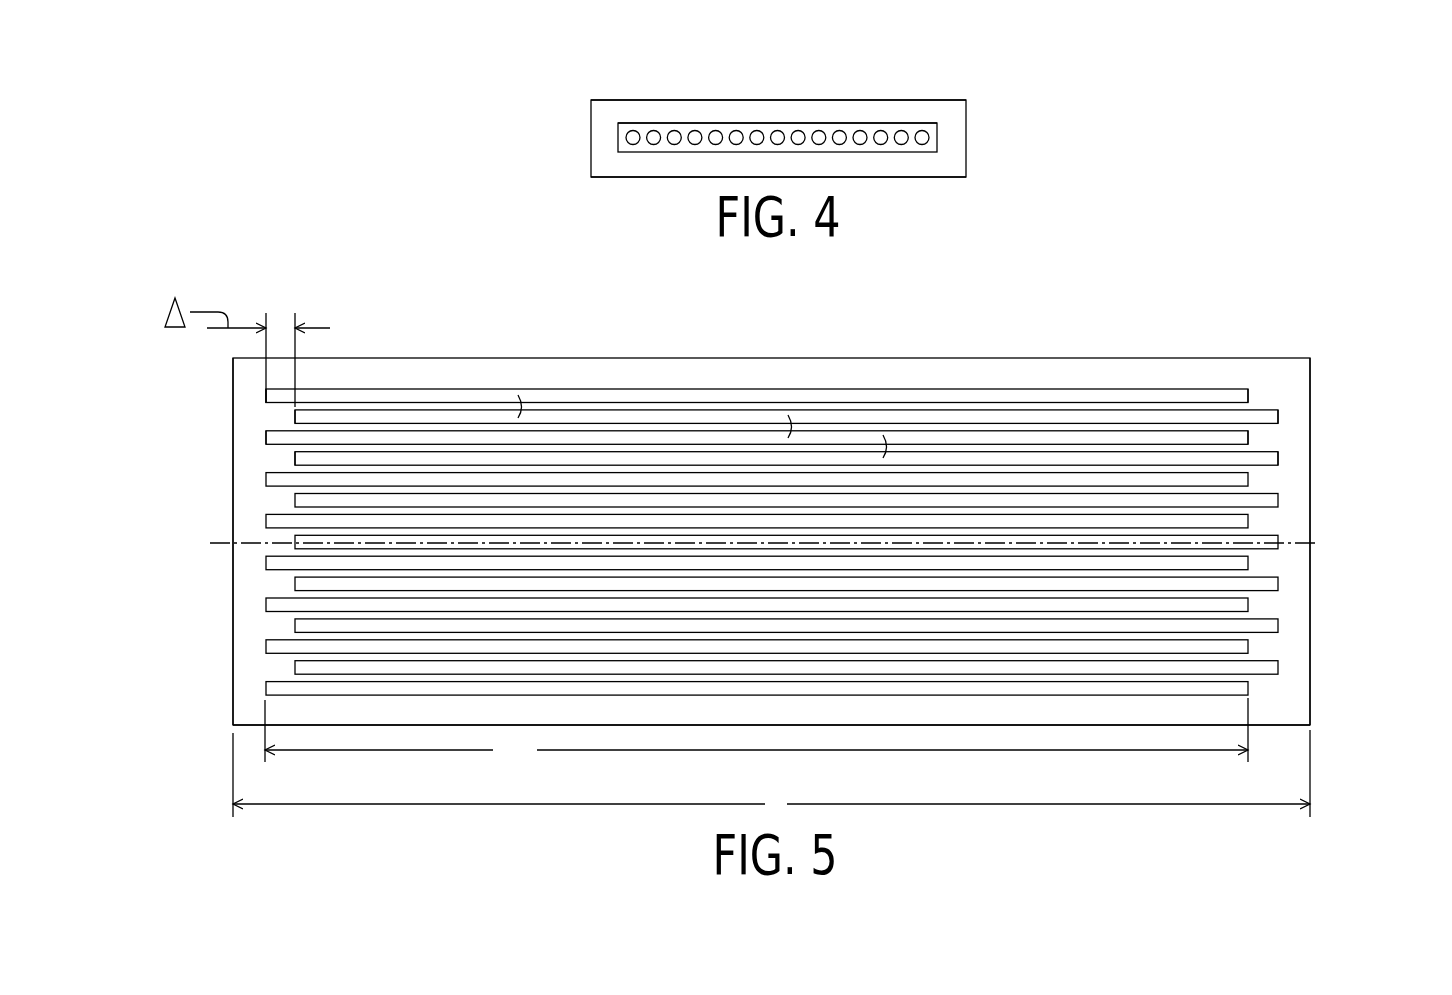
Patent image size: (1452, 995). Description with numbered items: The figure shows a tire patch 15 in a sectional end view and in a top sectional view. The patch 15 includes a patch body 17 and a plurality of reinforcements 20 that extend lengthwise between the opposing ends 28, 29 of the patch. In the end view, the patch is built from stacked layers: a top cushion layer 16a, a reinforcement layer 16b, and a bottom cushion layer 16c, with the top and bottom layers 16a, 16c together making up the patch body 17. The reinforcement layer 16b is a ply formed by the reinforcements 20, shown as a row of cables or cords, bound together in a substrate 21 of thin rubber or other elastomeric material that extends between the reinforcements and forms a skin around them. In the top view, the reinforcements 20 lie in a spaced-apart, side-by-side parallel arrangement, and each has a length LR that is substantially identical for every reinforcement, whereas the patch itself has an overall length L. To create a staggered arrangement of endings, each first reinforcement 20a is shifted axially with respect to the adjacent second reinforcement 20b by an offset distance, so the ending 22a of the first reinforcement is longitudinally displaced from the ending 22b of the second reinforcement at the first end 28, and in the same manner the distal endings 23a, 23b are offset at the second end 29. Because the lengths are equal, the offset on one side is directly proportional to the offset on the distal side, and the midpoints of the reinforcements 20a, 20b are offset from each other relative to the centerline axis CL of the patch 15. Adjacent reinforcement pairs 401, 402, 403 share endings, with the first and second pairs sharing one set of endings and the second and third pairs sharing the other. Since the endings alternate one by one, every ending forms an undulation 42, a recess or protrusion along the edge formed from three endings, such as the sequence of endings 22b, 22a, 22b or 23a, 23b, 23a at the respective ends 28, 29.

In FIG. 5, the tire patch 15 is at (762, 540).
In FIG. 4, the top cushion layer 16a is at (685, 118).
In FIG. 4, the reinforcement layer 16b is at (838, 120).
In FIG. 4, the bottom cushion layer 16c is at (652, 165).
In FIG. 5, the bottom cushion layer 16c is at (1330, 690).
In FIG. 4, the patch body 17 is at (948, 88).
In FIG. 5, the patch body 17 is at (1040, 370).
In FIG. 4, the reinforcements 20 is at (929, 138).
In FIG. 5, the reinforcements 20 is at (772, 506).
In FIG. 5, the first reinforcement 20a is at (400, 418).
In FIG. 5, the second reinforcement 20b is at (470, 392).
In FIG. 4, the substrate 21 is at (747, 130).
In FIG. 5, the first reinforcement ending of first reinforcement 22a is at (295, 417).
In FIG. 5, the first reinforcement ending of second reinforcement 22b is at (266, 393).
In FIG. 5, the second reinforcement ending of first reinforcement 23a is at (1278, 415).
In FIG. 5, the second reinforcement ending of second reinforcement 23b is at (1248, 393).
In FIG. 5, the first end of tire patch 28 is at (223, 642).
In FIG. 5, the second end of tire patch 29 is at (1342, 605).
In FIG. 5, the first reinforcement pair 401 is at (521, 406).
In FIG. 5, the second reinforcement pair 402 is at (791, 428).
In FIG. 5, the third reinforcement pair 403 is at (886, 447).
In FIG. 5, the undulation 42 is at (275, 412).
In FIG. 5, the centerline axis CL is at (1297, 543).
In FIG. 5, the patch length L is at (771, 773).
In FIG. 5, the reinforcement length LR is at (756, 736).